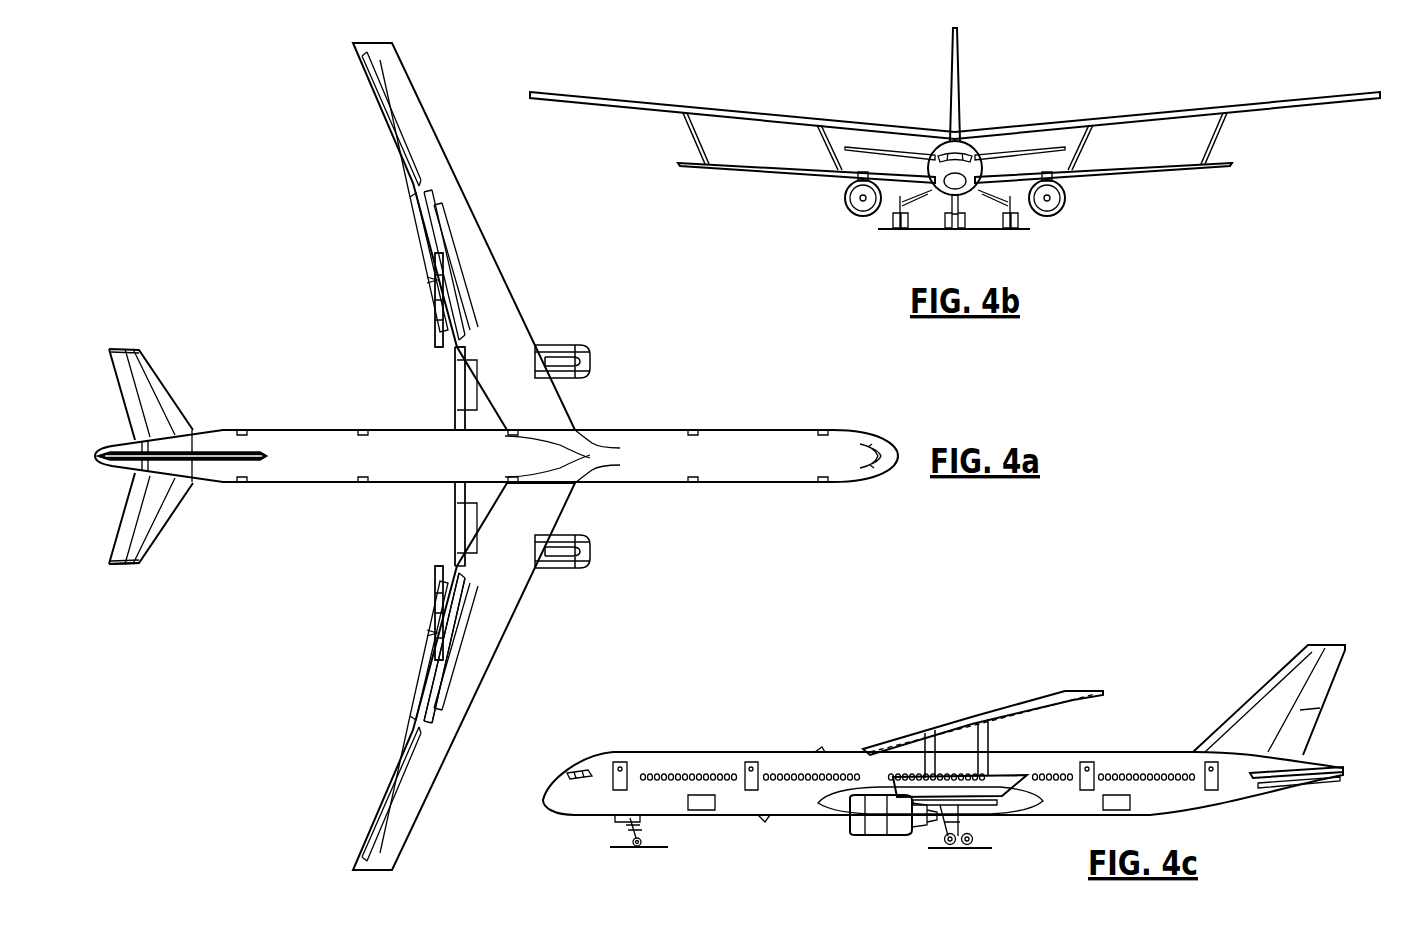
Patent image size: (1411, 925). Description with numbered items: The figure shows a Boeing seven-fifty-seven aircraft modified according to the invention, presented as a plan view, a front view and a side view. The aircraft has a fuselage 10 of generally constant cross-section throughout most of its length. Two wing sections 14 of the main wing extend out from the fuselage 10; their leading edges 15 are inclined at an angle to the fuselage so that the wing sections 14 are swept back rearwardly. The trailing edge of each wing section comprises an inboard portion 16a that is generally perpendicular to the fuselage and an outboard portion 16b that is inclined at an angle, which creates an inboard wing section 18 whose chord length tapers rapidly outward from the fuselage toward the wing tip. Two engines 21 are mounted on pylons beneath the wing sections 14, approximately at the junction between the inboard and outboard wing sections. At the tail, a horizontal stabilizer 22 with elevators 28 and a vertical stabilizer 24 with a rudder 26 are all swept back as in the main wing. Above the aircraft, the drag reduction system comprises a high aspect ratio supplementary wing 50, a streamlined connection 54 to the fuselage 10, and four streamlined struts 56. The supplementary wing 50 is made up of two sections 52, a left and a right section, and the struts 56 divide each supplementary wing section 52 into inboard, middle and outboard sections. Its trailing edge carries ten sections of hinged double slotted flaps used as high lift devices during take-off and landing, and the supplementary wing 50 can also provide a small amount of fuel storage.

In FIG. 4A, the fuselage 10 is at (757, 483).
In FIG. 4B, the fuselage 10 is at (968, 197).
In FIG. 4C, the fuselage 10 is at (793, 752).
In FIG. 4A, the wing sections 14 is at (574, 488).
In FIG. 4B, the wing sections 14 is at (763, 176).
In FIG. 4C, the wing sections 14 is at (960, 790).
In FIG. 4A, the leading edges 15 is at (562, 396).
In FIG. 4A, the inboard portion 16a is at (458, 518).
In FIG. 4A, the outboard portion 16b is at (437, 632).
In FIG. 4A, the inboard wing section 18 is at (495, 398).
In FIG. 4A, the engines 21 is at (592, 360).
In FIG. 4B, the engines 21 is at (845, 208).
In FIG. 4C, the engines 21 is at (858, 833).
In FIG. 4A, the horizontal stabilizer 22 is at (158, 512).
In FIG. 4C, the horizontal stabilizer 22 is at (1318, 790).
In FIG. 4C, the vertical stabilizer 24 is at (1265, 708).
In FIG. 4C, the rudder 26 is at (1340, 668).
In FIG. 4A, the elevators 28 is at (118, 570).
In FIG. 4A, the supplementary wing 50 is at (458, 350).
In FIG. 4A, the supplementary wing sections 52 is at (473, 684).
In FIG. 4B, the supplementary wing sections 52 is at (716, 105).
In FIG. 4C, the supplementary wing sections 52 is at (948, 716).
In FIG. 4A, the streamlined connection 54 is at (575, 438).
In FIG. 4B, the struts 56 is at (703, 138).
In FIG. 4C, the struts 56 is at (956, 748).